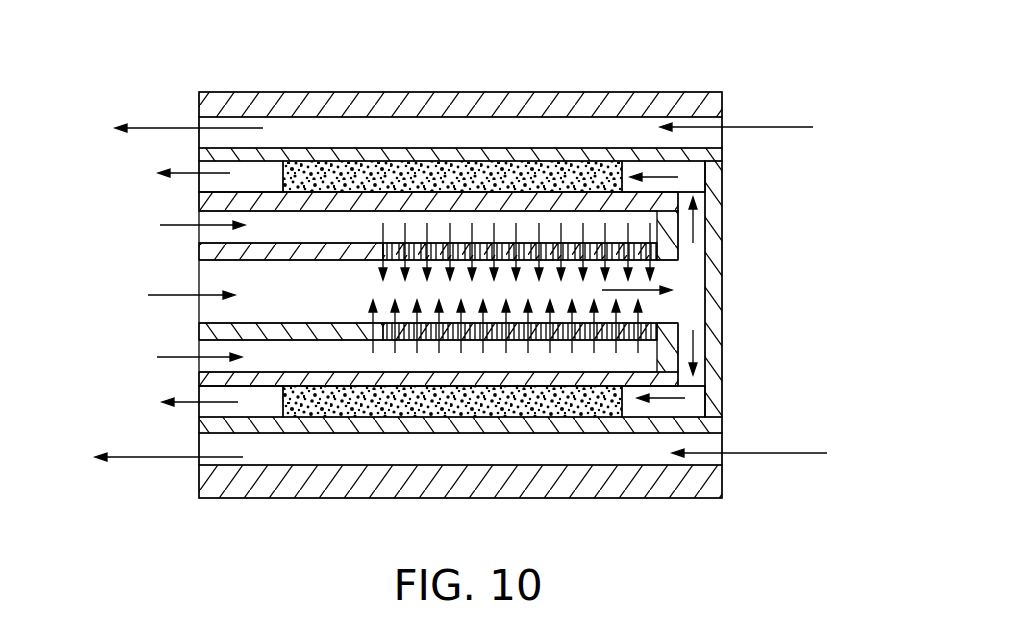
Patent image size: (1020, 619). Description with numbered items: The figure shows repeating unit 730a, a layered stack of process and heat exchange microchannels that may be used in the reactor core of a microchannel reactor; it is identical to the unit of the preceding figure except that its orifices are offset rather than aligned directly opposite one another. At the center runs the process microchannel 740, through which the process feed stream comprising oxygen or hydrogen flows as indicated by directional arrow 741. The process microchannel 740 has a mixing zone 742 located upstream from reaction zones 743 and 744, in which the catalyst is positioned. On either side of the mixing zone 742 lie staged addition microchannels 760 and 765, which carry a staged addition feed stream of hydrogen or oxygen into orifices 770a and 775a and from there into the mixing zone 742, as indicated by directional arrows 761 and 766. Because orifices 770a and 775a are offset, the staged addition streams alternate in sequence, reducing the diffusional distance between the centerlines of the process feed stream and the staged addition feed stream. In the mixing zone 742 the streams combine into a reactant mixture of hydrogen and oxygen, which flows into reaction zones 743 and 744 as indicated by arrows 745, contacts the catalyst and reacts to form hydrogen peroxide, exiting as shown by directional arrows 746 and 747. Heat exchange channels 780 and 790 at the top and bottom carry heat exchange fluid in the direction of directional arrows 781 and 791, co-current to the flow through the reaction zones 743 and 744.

The repeating unit 730a is at (292, 60).
The process microchannel 740 is at (260, 178).
The heat exchange channel 790 is at (488, 132).
The directional arrow 791 is at (172, 128).
The reaction zone 744 is at (535, 170).
The directional arrow 747 is at (187, 173).
The orifice 770a is at (562, 160).
The staged addition microchannel 760 is at (335, 227).
The directional arrow 761 is at (173, 225).
The mixing zone 742 is at (417, 287).
The directional arrow 741 is at (173, 295).
The arrow 745 is at (668, 172).
The orifice 775a is at (506, 300).
The staged addition microchannel 766 is at (177, 358).
The staged addition microchannel 765 is at (328, 358).
The directional arrow 746 is at (187, 404).
The reaction zone 743 is at (546, 418).
The heat exchange channel 780 is at (593, 443).
The directional arrow 781 is at (155, 458).